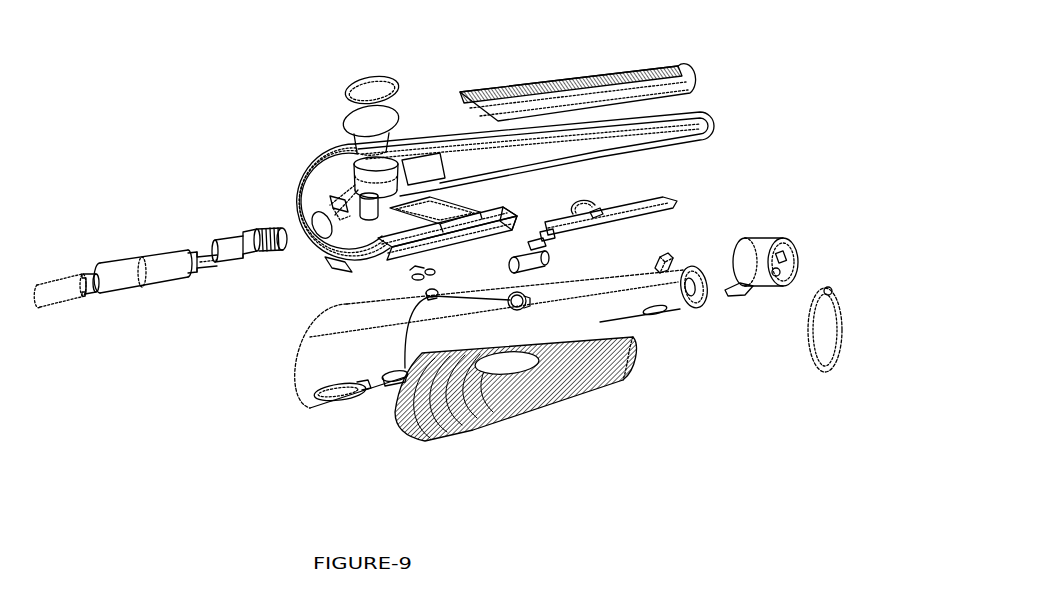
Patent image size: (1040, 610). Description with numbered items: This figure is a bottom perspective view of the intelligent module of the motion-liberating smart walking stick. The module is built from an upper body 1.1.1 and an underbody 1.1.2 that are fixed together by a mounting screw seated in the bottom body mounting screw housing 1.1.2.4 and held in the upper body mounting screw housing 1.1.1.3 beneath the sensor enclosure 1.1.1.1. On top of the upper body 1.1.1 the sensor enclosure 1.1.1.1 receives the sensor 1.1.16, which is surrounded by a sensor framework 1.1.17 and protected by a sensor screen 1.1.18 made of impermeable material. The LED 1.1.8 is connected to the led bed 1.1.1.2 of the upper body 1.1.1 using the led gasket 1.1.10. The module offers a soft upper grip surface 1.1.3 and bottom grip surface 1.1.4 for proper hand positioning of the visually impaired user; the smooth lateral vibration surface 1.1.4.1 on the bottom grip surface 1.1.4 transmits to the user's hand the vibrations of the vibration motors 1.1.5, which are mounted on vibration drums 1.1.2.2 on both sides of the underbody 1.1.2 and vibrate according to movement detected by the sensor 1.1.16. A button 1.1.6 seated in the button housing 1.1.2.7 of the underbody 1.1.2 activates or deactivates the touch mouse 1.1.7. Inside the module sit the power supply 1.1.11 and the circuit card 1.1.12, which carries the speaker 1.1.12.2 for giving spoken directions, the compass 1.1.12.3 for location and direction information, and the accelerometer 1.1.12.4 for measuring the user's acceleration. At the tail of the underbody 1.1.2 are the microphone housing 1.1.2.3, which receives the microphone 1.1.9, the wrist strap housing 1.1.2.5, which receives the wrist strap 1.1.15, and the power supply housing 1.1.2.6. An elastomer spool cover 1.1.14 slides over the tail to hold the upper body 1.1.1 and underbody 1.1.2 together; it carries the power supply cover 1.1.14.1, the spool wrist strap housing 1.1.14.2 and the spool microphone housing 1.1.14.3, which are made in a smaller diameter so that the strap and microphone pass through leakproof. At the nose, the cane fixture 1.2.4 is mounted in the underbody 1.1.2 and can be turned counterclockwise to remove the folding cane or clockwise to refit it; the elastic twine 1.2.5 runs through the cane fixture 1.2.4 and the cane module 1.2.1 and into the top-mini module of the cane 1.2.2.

The upper body 1.1.1 is at (710, 118).
The sensor enclosure 1.1.1.1 is at (355, 183).
The led bed 1.1.1.2 is at (323, 203).
The upper body mounting screw housing 1.1.1.3 is at (369, 200).
The underbody 1.1.2 is at (302, 392).
The vibration drums 1.1.2.2 is at (520, 308).
The microphone housing 1.1.2.3 is at (702, 284).
The bottom body mounting screw housing 1.1.2.4 is at (363, 383).
The wrist strap housing 1.1.2.5 is at (688, 296).
The power supply housing 1.1.2.6 is at (662, 313).
The button housing 1.1.2.7 is at (395, 378).
The upper grip surface 1.1.3 is at (680, 73).
The bottom grip surface 1.1.4 is at (527, 407).
The lateral vibration surface 1.1.4.1 is at (572, 393).
The vibration motors 1.1.5 is at (533, 260).
The button 1.1.6 is at (433, 294).
The touch mouse 1.1.7 is at (467, 212).
The led 1.1.8 is at (377, 292).
The microphone 1.1.9 is at (660, 263).
The led gasket 1.1.10 is at (323, 267).
The power supply 1.1.11 is at (540, 212).
The circuit card 1.1.12 is at (670, 203).
The speaker 1.1.12.2 is at (593, 208).
The compass 1.1.12.3 is at (552, 236).
The accelerometer 1.1.12.4 is at (538, 243).
The spool cover 1.1.14 is at (780, 233).
The power supply cover 1.1.14.1 is at (743, 288).
The spool wrist strap housing 1.1.14.2 is at (780, 275).
The spool microphone housing 1.1.14.3 is at (782, 257).
The wrist strap 1.1.15 is at (845, 340).
The sensor 1.1.16 is at (357, 143).
The sensor framework 1.1.17 is at (350, 72).
The sensor screen 1.1.18 is at (362, 122).
The module of cane 1.2.1 is at (65, 300).
The top-mini module of cane 1.2.2 is at (133, 258).
The cane fixture 1.2.4 is at (257, 233).
The elastic twine 1.2.5 is at (210, 262).